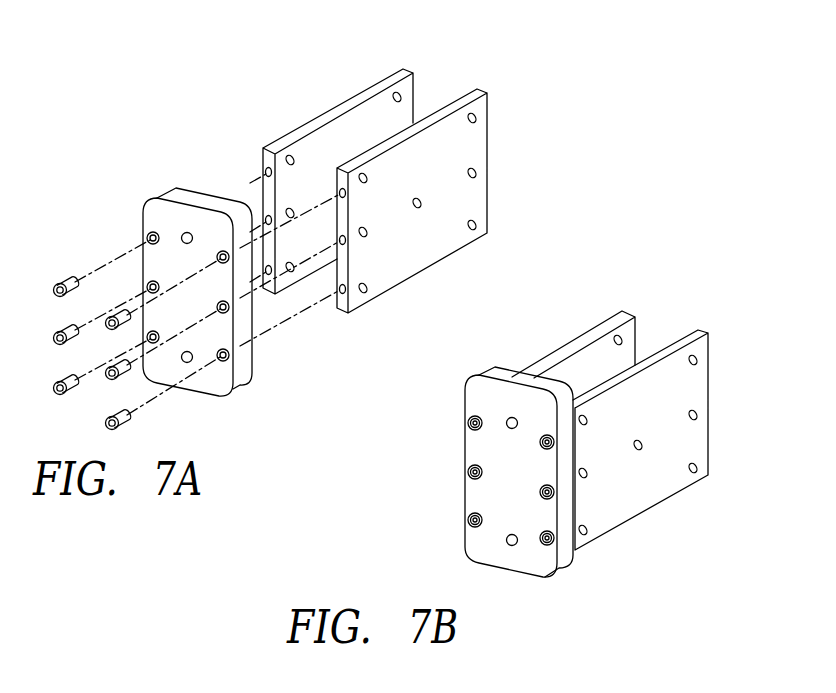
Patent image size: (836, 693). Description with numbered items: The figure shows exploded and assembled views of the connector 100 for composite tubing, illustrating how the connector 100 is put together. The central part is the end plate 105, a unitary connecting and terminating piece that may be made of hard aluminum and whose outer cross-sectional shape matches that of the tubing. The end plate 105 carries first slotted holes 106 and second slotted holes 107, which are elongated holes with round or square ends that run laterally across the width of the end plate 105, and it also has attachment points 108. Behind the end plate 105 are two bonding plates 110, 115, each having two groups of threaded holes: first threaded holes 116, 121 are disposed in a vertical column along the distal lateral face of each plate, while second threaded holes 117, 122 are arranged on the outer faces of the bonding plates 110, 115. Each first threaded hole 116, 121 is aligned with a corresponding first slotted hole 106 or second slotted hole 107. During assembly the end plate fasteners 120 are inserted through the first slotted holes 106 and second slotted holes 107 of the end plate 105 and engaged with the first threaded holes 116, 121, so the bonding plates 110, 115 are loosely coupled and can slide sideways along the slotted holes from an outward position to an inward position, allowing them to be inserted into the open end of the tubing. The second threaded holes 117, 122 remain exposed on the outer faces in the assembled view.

In FIG. 7A, the connector 100 is at (215, 120).
In FIG. 7B, the connector 100 is at (674, 300).
In FIG. 7A, the end plate 105 is at (143, 203).
In FIG. 7B, the end plate 105 is at (455, 547).
In FIG. 7A, the first slotted holes 106 is at (147, 221).
In FIG. 7A, the second slotted holes 107 is at (250, 254).
In FIG. 7A, the attachment points 108 is at (185, 233).
In FIG. 7B, the attachment points 108 is at (508, 418).
In FIG. 7A, the bonding plate 110 is at (335, 112).
In FIG. 7B, the bonding plate 110 is at (550, 355).
In FIG. 7A, the bonding plate 115 is at (442, 248).
In FIG. 7B, the bonding plate 115 is at (660, 490).
In FIG. 7A, the first threaded holes 116 is at (266, 172).
In FIG. 7A, the second threaded holes 117 is at (290, 156).
In FIG. 7B, the second threaded holes 117 is at (613, 342).
In FIG. 7A, the end plate fasteners 120 is at (123, 306).
In FIG. 7B, the end plate fasteners 120 is at (468, 428).
In FIG. 7A, the first threaded holes 121 is at (347, 195).
In FIG. 7A, the second threaded holes 122 is at (367, 176).
In FIG. 7B, the second threaded holes 122 is at (588, 419).